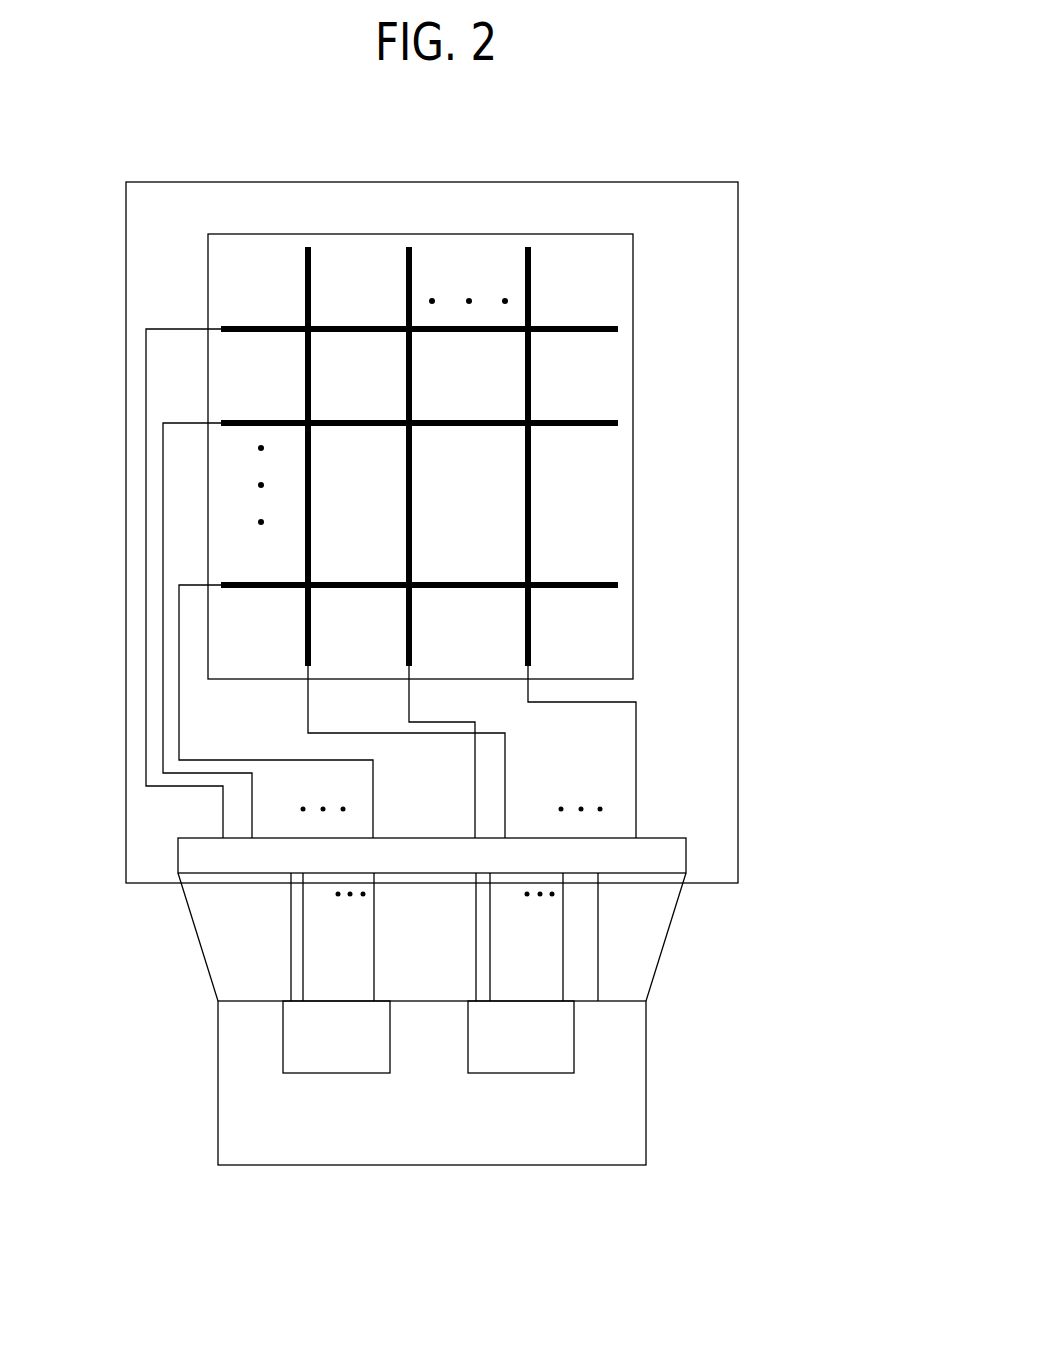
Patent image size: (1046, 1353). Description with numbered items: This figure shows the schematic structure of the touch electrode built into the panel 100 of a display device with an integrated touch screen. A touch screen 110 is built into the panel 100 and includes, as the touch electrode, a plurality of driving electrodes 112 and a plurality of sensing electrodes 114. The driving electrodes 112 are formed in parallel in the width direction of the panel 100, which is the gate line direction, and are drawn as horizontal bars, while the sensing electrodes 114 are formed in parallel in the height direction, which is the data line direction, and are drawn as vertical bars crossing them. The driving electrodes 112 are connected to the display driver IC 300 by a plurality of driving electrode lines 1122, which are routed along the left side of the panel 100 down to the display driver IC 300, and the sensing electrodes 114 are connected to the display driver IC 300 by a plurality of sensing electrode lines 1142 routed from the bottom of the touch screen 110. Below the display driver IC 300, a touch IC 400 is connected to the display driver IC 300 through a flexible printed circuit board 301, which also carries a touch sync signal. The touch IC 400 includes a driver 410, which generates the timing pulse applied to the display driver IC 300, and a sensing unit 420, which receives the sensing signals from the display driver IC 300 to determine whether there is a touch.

The panel 100 is at (738, 257).
The touch screen 110 is at (582, 232).
The driving electrodes 112 is at (592, 323).
The sensing electrodes 114 is at (312, 273).
The driving electrode lines 1122 is at (147, 396).
The sensing electrode lines 1142 is at (636, 745).
The display driver IC 300 is at (686, 857).
The flexible printed circuit board 301 is at (672, 929).
The touch IC 400 is at (646, 1065).
The driver 410 is at (340, 1073).
The sensing unit 420 is at (522, 1073).